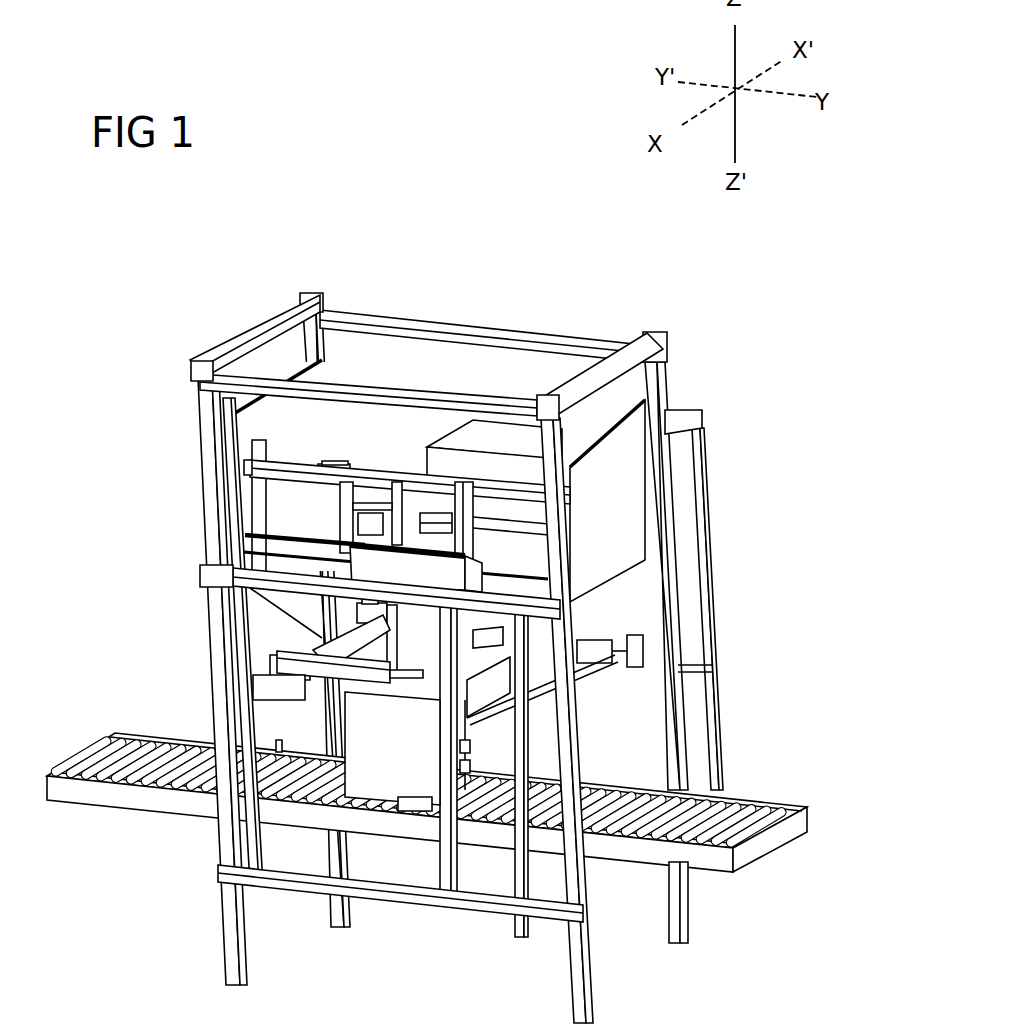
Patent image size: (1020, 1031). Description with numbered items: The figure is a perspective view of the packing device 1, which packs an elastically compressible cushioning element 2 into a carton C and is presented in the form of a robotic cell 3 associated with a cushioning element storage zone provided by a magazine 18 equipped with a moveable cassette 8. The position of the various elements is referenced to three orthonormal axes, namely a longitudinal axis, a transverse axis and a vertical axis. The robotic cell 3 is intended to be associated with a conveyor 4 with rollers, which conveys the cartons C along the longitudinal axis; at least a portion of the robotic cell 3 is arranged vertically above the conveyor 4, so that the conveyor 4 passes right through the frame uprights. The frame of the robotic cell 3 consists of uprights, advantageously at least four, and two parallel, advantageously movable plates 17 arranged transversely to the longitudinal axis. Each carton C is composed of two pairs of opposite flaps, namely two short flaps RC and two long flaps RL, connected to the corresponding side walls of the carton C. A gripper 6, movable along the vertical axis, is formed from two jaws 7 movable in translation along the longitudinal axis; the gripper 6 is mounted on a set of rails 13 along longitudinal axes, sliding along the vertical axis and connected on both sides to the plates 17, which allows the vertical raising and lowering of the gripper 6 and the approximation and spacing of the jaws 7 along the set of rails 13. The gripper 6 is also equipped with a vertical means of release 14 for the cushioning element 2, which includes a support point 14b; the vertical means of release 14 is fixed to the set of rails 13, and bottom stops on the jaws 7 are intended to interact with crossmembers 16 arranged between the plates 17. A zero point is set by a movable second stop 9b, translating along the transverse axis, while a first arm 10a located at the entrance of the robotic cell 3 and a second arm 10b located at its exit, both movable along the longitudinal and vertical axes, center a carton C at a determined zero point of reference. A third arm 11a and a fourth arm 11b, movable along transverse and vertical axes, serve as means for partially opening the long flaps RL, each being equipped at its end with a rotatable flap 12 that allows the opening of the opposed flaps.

The packing device 1 is at (432, 265).
The cushioning element 2 is at (358, 576).
The robotic cell 3 is at (198, 598).
The conveyor 4 is at (67, 752).
The gripper 6 is at (362, 537).
The jaws 7 is at (333, 467).
The moveable cassette 8 is at (680, 420).
The second stop 9b is at (420, 803).
The first arm 10a is at (283, 742).
The second arm 10b is at (483, 717).
The third arm 11a is at (337, 640).
The fourth arm 11b is at (543, 707).
The flap 12 is at (337, 688).
The set of rails 13 is at (283, 467).
The vertical means of release 14 is at (372, 472).
The support point 14b is at (393, 510).
The crossmembers 16 is at (510, 567).
The plates 17 is at (237, 427).
The magazine 18 is at (710, 605).
The carton C is at (383, 776).
The short flaps RC is at (495, 680).
The long flaps RL is at (430, 712).